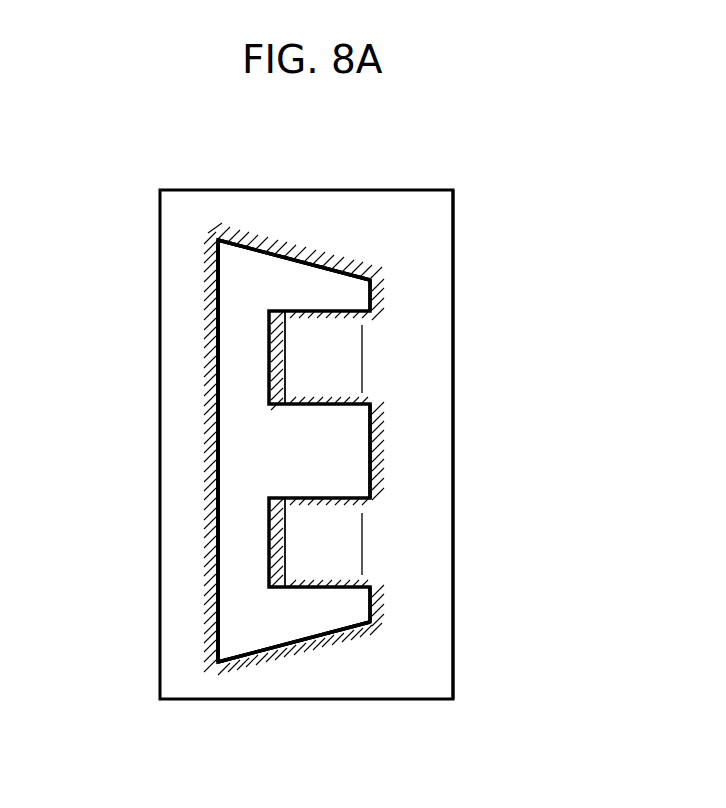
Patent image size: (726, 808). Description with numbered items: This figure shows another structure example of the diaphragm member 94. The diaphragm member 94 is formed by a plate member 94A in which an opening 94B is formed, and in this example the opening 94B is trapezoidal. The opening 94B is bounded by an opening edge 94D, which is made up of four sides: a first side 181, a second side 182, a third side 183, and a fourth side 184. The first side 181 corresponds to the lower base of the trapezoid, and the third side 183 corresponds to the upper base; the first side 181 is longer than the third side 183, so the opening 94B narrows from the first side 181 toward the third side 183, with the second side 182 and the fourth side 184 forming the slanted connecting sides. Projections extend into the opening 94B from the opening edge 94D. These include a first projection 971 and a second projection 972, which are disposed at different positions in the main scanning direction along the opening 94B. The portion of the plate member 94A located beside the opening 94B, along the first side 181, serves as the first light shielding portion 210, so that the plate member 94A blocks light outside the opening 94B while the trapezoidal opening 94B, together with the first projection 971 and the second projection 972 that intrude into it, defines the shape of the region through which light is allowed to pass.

The diaphragm member 94 is at (412, 164).
The plate member 94A is at (453, 640).
The opening 94B is at (237, 250).
The opening edge 94D is at (252, 644).
The first projection 971 is at (312, 602).
The second projection 972 is at (336, 300).
The first side 181 is at (215, 507).
The second side 182 is at (280, 250).
The third side 183 is at (373, 298).
The fourth side 184 is at (248, 654).
The first light shielding portion 210 is at (215, 446).